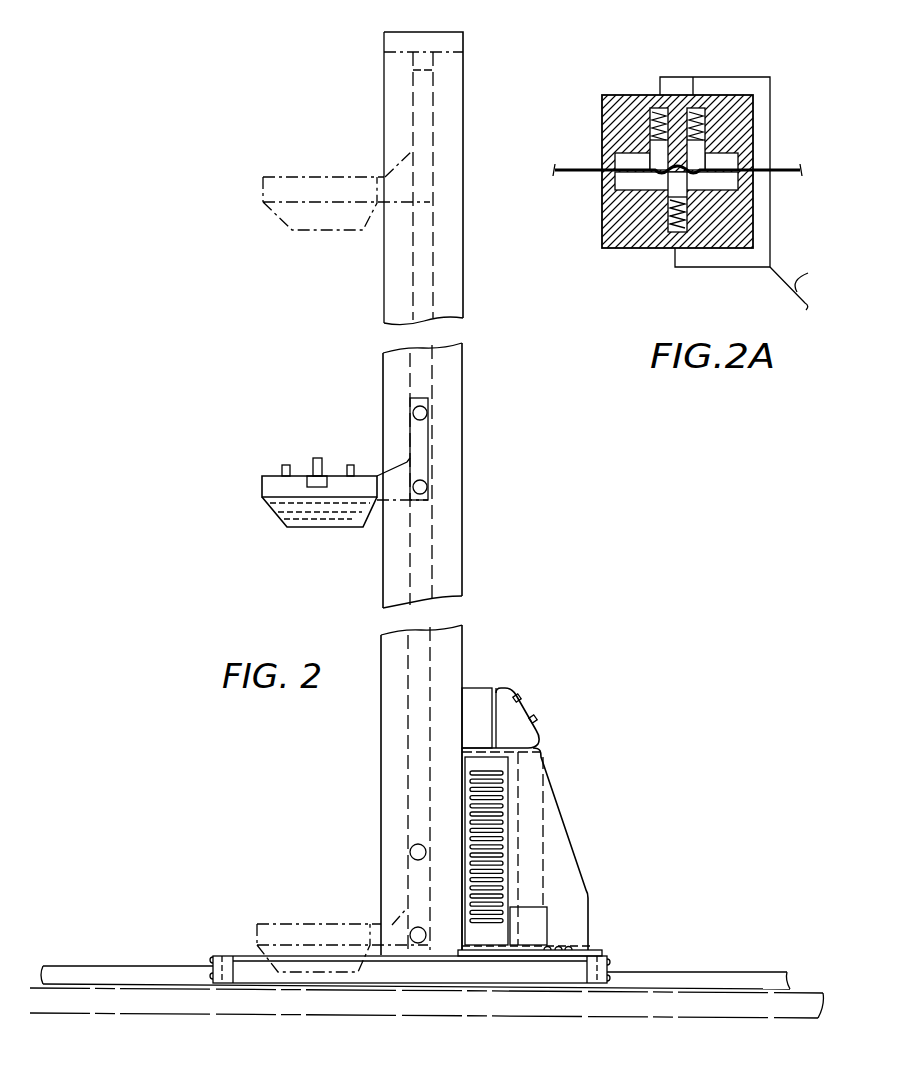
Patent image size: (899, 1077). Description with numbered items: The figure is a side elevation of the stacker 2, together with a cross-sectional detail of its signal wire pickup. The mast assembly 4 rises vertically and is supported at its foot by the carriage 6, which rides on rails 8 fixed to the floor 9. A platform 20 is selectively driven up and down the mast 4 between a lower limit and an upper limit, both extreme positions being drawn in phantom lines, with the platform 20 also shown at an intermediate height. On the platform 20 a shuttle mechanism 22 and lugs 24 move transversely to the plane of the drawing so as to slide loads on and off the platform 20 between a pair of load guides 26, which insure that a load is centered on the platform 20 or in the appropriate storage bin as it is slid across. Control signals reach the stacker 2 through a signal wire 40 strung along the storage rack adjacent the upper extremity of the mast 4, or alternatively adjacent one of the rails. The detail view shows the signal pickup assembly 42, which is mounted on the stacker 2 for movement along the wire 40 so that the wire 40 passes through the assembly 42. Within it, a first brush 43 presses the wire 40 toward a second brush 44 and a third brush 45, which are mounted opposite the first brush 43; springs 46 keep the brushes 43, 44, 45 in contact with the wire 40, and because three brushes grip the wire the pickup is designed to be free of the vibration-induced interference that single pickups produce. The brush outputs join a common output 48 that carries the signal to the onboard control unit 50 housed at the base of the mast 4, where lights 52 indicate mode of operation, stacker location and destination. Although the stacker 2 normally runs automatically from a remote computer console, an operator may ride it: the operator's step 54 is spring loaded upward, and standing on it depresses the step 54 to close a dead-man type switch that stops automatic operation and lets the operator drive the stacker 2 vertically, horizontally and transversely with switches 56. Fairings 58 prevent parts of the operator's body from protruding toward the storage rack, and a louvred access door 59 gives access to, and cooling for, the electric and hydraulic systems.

In FIG. 2, the stacker 2 is at (556, 725).
In FIG. 2, the mast assembly 4 is at (463, 535).
In FIG. 2, the carriage 6 is at (397, 968).
In FIG. 2, the rails 8 is at (652, 972).
In FIG. 2, the floor 9 is at (660, 1012).
In FIG. 2, the platform 20 is at (292, 208).
In FIG. 2, the shuttle mechanism 22 is at (310, 477).
In FIG. 2, the lugs 24 is at (319, 458).
In FIG. 2, the load guides 26 is at (283, 466).
In FIG. 2A, the signal wire 40 is at (787, 177).
In FIG. 2A, the signal pickup assembly 42 is at (737, 250).
In FIG. 2A, the first brush 43 is at (678, 182).
In FIG. 2A, the second brush 44 is at (657, 147).
In FIG. 2A, the third brush 45 is at (693, 147).
In FIG. 2A, the springs 46 is at (694, 106).
In FIG. 2A, the common output 48 is at (794, 282).
In FIG. 2, the onboard control unit 50 is at (476, 702).
In FIG. 2, the lights 52 is at (519, 701).
In FIG. 2, the operator's step 54 is at (592, 950).
In FIG. 2, the switches 56 is at (536, 721).
In FIG. 2, the fairings 58 is at (562, 858).
In FIG. 2, the louvred access door 59 is at (480, 940).